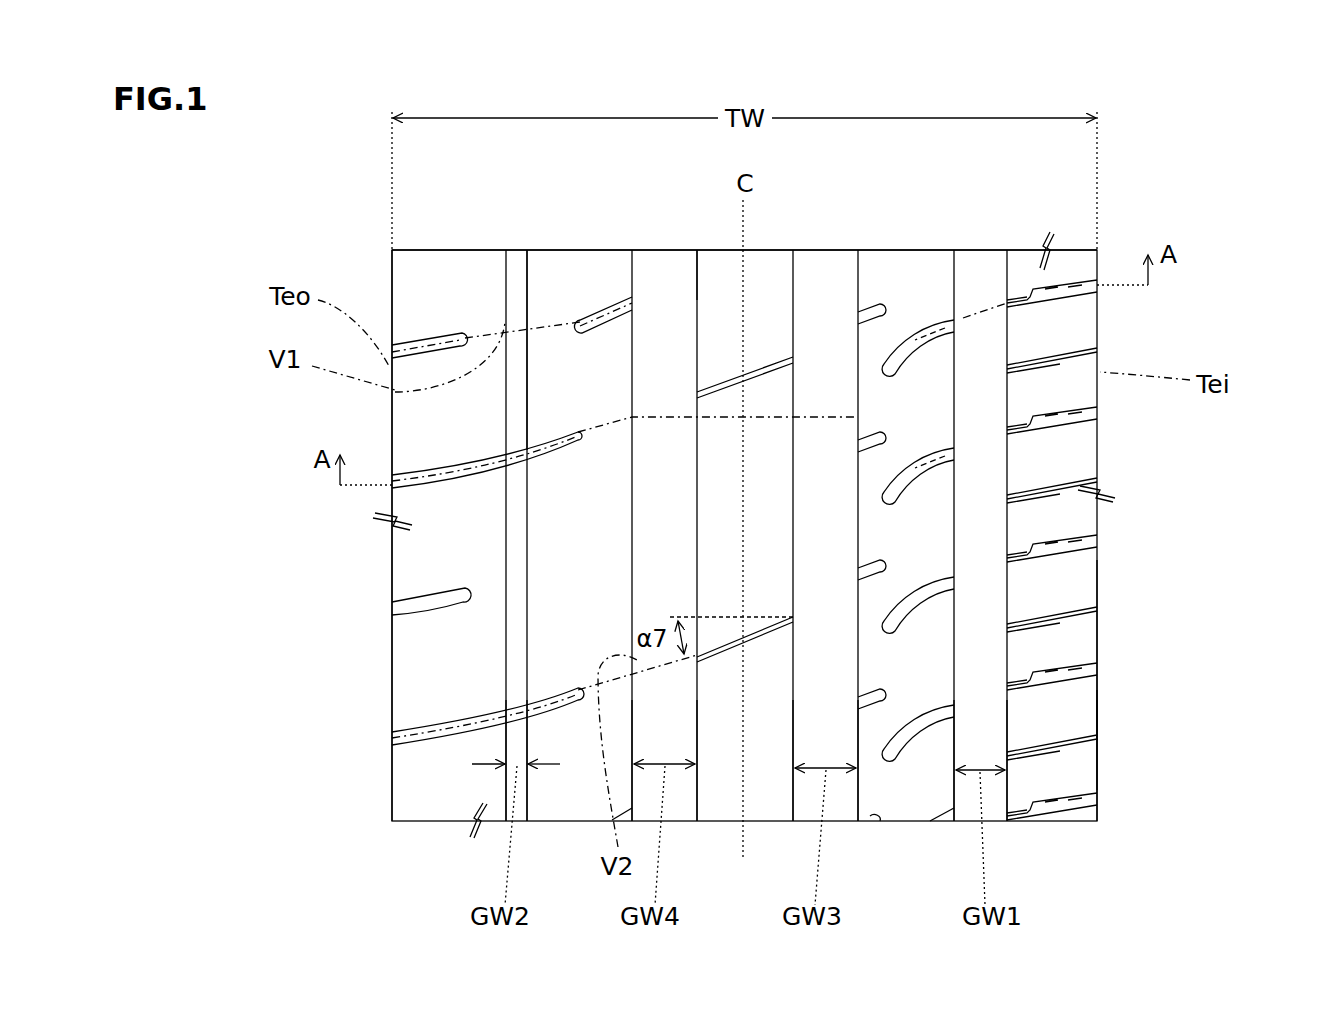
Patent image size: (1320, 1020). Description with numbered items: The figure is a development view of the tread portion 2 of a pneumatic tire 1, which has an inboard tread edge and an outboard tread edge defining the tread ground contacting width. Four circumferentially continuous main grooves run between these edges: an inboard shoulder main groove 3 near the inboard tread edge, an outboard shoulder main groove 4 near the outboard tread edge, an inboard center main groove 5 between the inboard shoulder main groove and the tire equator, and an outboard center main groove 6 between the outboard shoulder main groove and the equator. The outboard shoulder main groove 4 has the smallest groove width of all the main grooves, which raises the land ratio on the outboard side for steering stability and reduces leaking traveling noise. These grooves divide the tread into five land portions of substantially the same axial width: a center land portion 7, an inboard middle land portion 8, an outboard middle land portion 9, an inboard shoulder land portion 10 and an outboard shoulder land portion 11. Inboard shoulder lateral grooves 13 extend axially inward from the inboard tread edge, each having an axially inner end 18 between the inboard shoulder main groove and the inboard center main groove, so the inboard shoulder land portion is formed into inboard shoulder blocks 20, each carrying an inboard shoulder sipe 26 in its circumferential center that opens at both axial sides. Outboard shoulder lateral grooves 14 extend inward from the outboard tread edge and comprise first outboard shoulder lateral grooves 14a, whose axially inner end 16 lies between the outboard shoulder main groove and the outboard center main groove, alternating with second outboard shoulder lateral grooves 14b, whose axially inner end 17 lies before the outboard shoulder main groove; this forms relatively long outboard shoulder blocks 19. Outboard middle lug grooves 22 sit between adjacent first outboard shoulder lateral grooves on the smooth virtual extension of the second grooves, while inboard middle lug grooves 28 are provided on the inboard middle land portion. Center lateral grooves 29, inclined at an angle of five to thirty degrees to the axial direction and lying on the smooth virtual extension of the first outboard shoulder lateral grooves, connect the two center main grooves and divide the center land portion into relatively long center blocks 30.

The tire 1 is at (1136, 194).
The tread portion 2 is at (966, 199).
The inboard shoulder main groove 3 is at (978, 268).
The outboard shoulder main groove 4 is at (517, 268).
The inboard center main groove 5 is at (823, 275).
The outboard center main groove 6 is at (667, 280).
The center land portion 7 is at (727, 793).
The inboard middle land portion 8 is at (915, 791).
The outboard middle land portion 9 is at (565, 793).
The inboard shoulder land portion 10 is at (1076, 823).
The outboard shoulder land portion 11 is at (437, 793).
The inboard shoulder lateral grooves 13 is at (1055, 420).
The outboard shoulder lateral grooves 14 is at (272, 405).
The first outboard shoulder lateral grooves 14a is at (445, 468).
The second outboard shoulder lateral grooves 14b is at (440, 600).
The axially inner end 16 is at (582, 425).
The axially inner end 17 is at (465, 335).
The axially inner end 18 is at (858, 400).
The outboard shoulder blocks 19 is at (412, 288).
The inboard shoulder blocks 20 is at (1080, 585).
The outboard middle lug grooves 22 is at (602, 305).
The inboard shoulder sipe 26 is at (1070, 740).
The inboard middle lug grooves 28 is at (870, 312).
The center lateral grooves 29 is at (765, 360).
The center blocks 30 is at (720, 275).